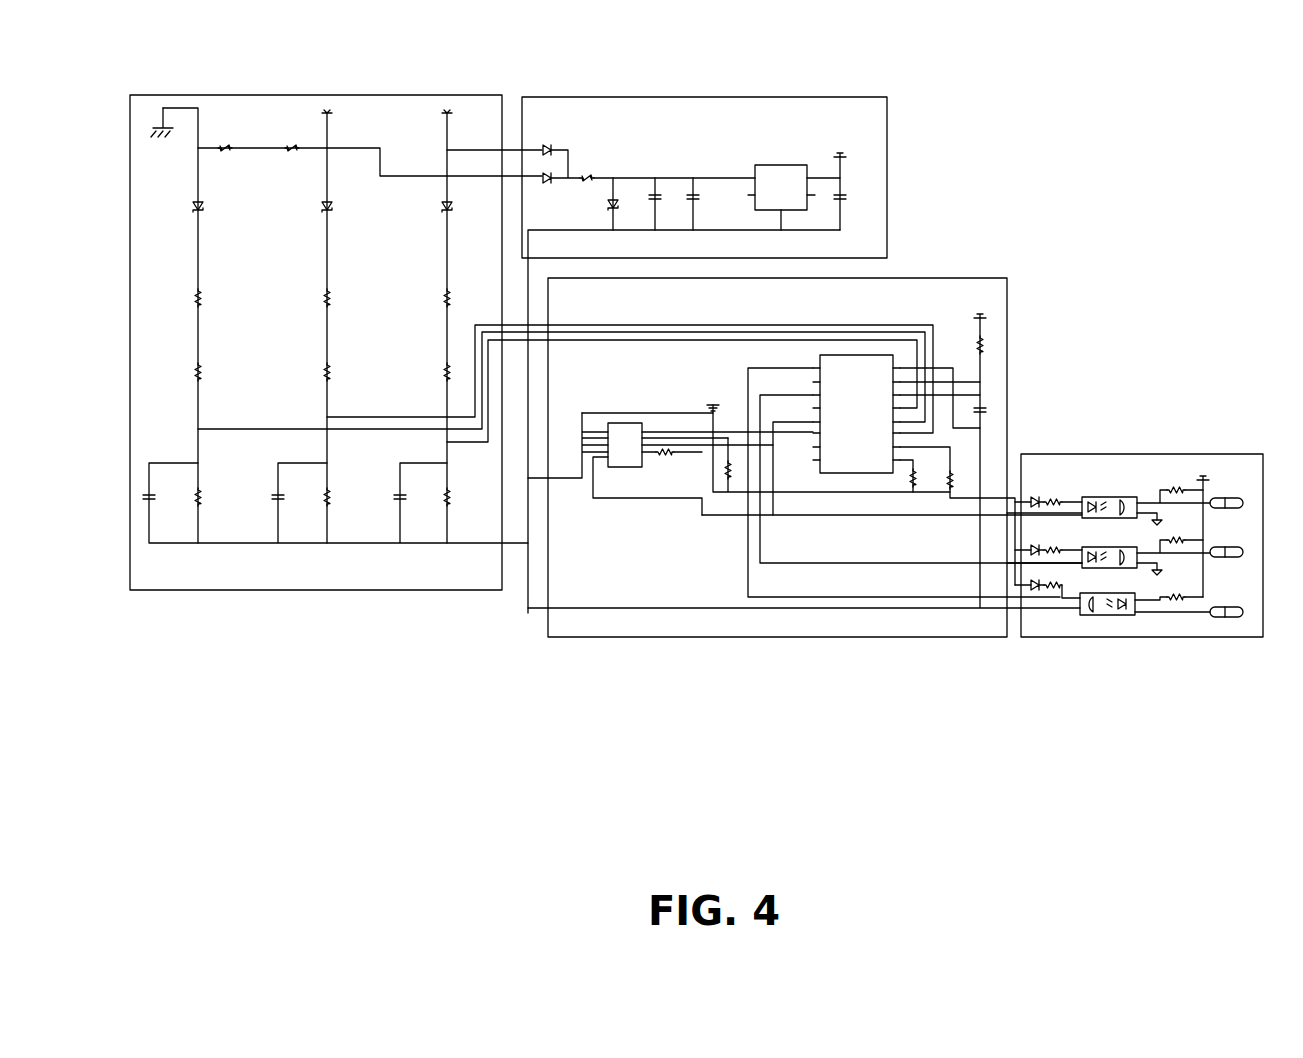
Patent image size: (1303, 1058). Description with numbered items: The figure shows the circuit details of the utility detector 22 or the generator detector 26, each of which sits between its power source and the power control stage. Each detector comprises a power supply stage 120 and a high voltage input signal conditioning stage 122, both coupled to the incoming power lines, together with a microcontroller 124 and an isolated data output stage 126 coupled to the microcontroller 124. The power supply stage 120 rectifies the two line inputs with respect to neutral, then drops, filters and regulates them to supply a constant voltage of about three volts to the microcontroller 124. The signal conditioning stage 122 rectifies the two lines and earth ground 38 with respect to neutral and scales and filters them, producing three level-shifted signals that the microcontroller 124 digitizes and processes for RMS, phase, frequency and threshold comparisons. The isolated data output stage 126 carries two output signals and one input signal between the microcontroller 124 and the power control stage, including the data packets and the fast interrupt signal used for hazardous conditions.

The utility detector 22 is at (701, 329).
The generator detector 26 is at (1143, 88).
The earth ground 38 is at (163, 141).
The power supply stage 120 is at (762, 96).
The high voltage input signal conditioning stage 122 is at (382, 96).
The microcontroller 124 is at (947, 283).
The isolated data output stage 126 is at (1192, 455).